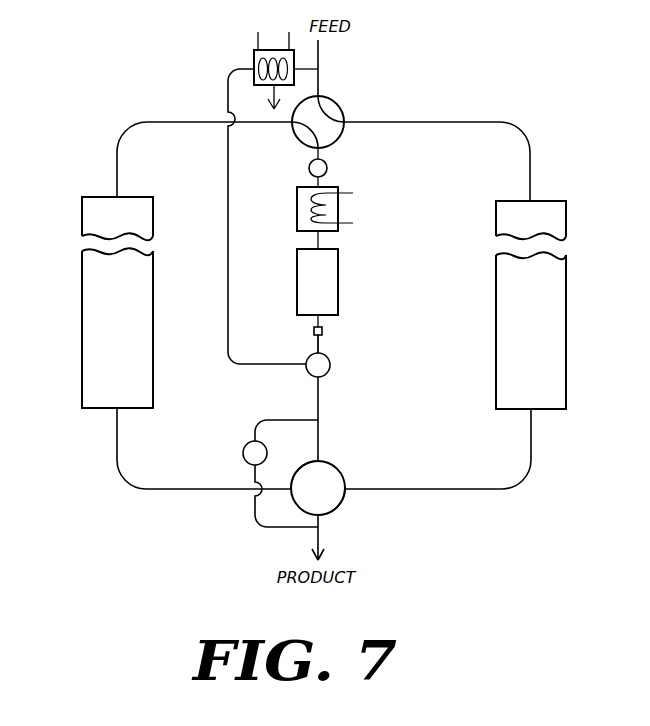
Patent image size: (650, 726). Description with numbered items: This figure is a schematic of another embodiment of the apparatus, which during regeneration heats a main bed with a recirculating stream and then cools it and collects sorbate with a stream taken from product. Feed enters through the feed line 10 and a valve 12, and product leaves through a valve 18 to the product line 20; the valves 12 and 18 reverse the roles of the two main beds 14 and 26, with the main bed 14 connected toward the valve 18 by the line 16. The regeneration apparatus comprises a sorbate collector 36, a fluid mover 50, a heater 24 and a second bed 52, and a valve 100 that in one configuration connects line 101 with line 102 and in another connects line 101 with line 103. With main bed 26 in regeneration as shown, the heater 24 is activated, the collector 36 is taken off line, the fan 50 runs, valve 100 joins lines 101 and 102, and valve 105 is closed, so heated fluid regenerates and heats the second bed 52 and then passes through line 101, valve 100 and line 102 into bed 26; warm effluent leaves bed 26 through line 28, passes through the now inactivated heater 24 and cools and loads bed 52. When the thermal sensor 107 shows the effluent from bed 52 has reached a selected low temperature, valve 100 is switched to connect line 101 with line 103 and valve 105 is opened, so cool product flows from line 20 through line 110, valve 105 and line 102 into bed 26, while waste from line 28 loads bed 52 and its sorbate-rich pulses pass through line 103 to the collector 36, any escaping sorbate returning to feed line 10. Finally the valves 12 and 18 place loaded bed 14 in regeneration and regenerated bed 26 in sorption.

The feed line 10 is at (320, 58).
The valve 12 is at (333, 101).
The main bed 14 is at (567, 311).
The conduit 16 is at (425, 491).
The valve 18 is at (333, 471).
The product line 20 is at (321, 540).
The heater 24 is at (297, 203).
The main bed 26 is at (82, 302).
The line 28 is at (192, 120).
The sorbate collector 36 is at (254, 56).
The fluid mover 50 is at (327, 168).
The second bed 52 is at (340, 290).
The valve 100 is at (330, 368).
The line 101 is at (320, 343).
The line 102 is at (220, 490).
The line 103 is at (226, 158).
The valve 105 is at (247, 446).
The thermal sensor 107 is at (313, 331).
The line 110 is at (258, 527).